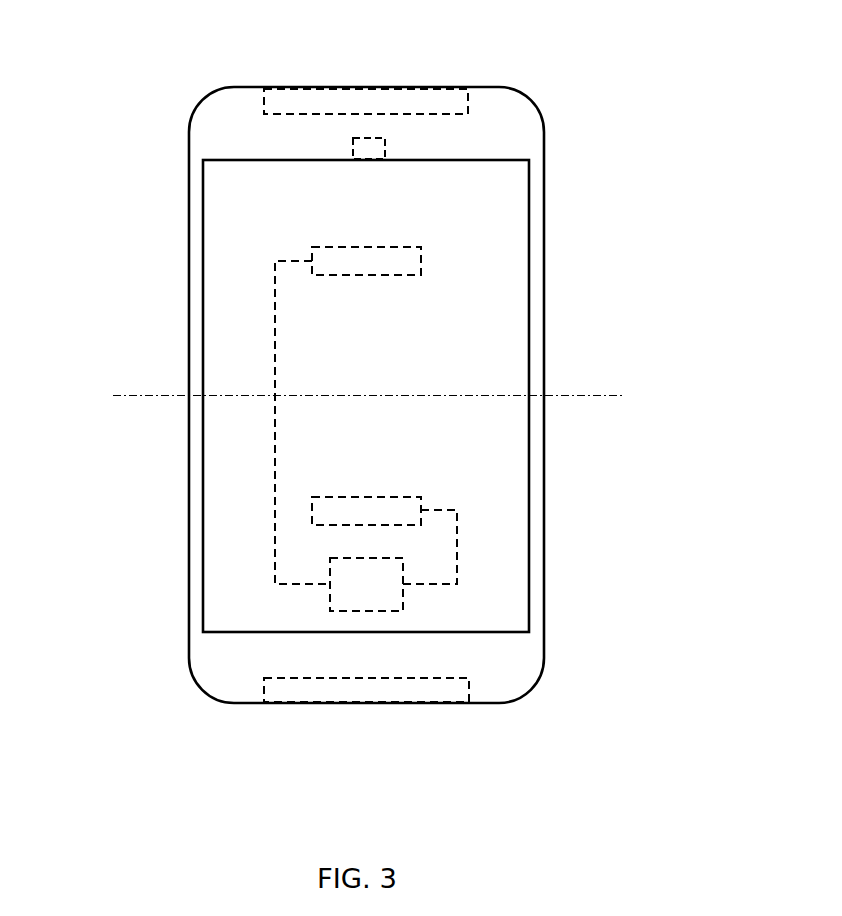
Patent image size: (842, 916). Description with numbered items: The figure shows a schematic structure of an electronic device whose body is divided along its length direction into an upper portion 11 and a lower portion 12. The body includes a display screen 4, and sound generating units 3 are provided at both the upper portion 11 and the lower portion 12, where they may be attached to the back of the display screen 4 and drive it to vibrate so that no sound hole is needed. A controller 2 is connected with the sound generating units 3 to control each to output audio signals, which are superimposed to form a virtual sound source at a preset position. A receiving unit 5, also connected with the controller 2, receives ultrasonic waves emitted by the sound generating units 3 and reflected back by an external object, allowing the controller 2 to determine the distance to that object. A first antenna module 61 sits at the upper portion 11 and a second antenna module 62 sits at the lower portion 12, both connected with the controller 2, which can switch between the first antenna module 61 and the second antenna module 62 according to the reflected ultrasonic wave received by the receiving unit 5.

The upper portion 11 is at (185, 236).
The lower portion 12 is at (185, 529).
The display screen 4 is at (453, 220).
The first antenna module 61 is at (447, 87).
The second antenna module 62 is at (447, 702).
The receiving unit 5 is at (377, 148).
The sound generating unit 3 is at (370, 275).
The controller 2 is at (383, 589).